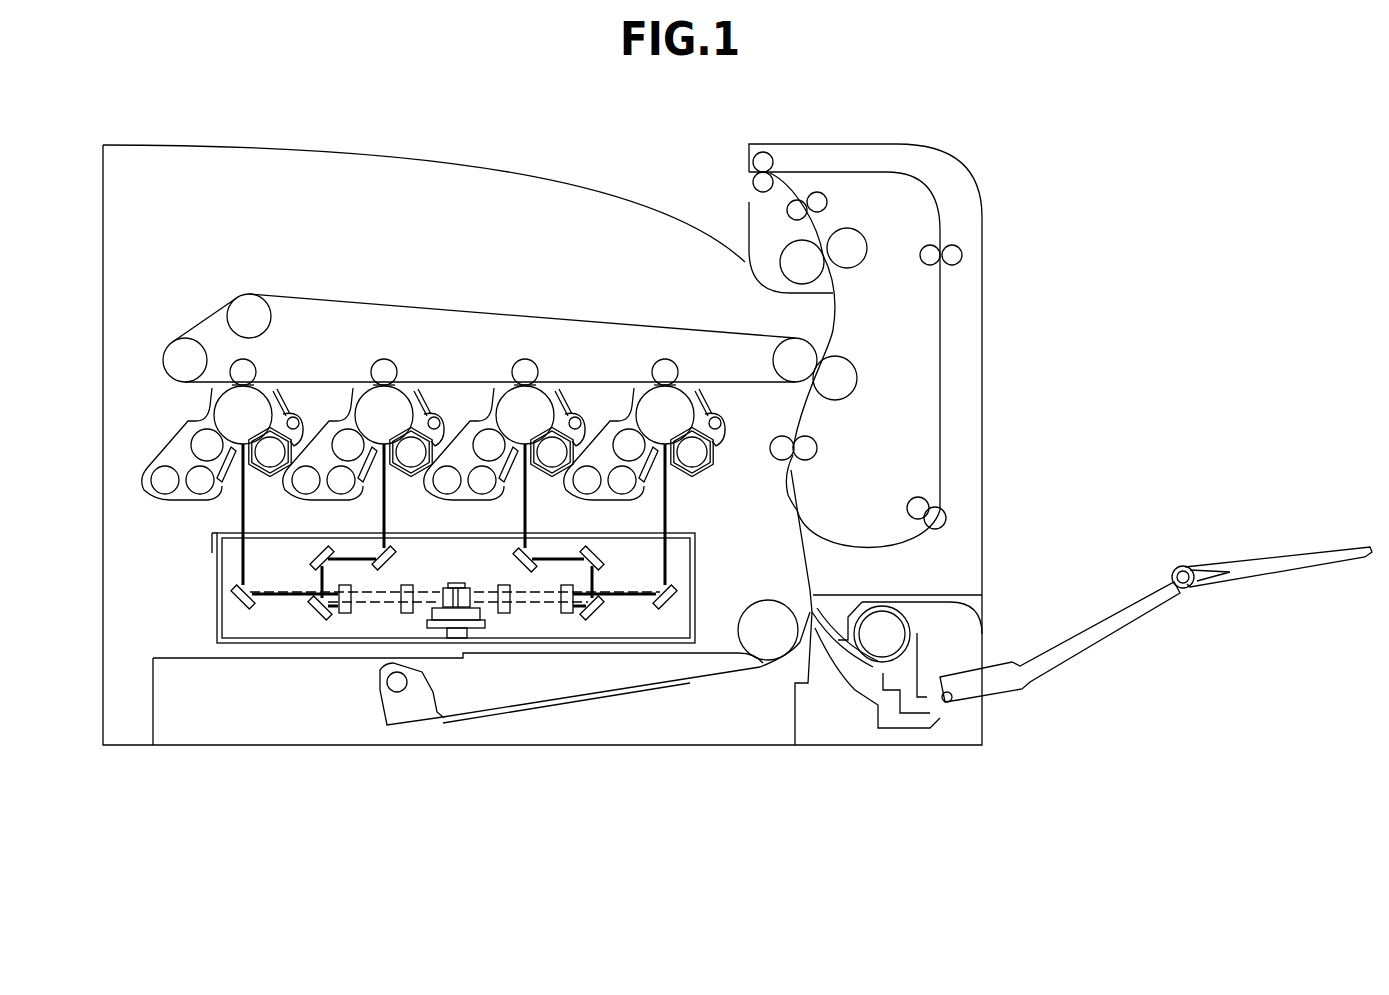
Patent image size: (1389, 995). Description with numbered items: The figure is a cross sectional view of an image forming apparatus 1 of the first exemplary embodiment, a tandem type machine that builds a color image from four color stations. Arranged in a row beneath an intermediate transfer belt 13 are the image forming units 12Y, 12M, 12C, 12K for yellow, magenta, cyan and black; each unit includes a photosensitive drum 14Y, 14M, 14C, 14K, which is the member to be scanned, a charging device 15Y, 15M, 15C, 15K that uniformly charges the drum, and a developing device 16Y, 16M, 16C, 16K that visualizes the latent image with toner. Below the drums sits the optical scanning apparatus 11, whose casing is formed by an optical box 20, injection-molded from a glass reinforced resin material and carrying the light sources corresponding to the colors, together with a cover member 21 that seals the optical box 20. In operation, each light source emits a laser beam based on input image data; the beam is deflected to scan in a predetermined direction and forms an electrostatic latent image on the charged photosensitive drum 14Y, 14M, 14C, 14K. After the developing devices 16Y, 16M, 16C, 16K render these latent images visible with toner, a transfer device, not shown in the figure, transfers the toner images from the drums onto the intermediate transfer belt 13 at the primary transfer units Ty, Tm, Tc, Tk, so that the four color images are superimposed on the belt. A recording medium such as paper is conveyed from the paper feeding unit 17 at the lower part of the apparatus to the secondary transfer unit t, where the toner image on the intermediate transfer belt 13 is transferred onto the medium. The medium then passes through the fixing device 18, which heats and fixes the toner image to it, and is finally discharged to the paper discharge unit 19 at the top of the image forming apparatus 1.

The image forming apparatus 1 is at (103, 352).
The optical scanning apparatus 11 is at (213, 600).
The image forming unit (yellow) 12Y is at (163, 503).
The image forming unit (magenta) 12M is at (313, 498).
The image forming unit (cyan) 12C is at (452, 500).
The image forming unit (black) 12K is at (600, 500).
The intermediate transfer belt 13 is at (345, 300).
The photosensitive drum (yellow) 14Y is at (285, 364).
The photosensitive drum (magenta) 14M is at (425, 364).
The photosensitive drum (cyan) 14C is at (565, 364).
The photosensitive drum (black) 14K is at (707, 364).
The charging device (yellow) 15Y is at (266, 474).
The charging device (magenta) 15M is at (407, 474).
The charging device (cyan) 15C is at (548, 474).
The charging device (black) 15K is at (688, 474).
The developing device (yellow) 16Y is at (181, 432).
The developing device (magenta) 16M is at (334, 432).
The developing device (cyan) 16C is at (476, 432).
The developing device (black) 16K is at (614, 430).
The paper feeding unit 17 is at (723, 678).
The fixing device 18 is at (866, 230).
The paper discharge unit 19 is at (492, 163).
The optical box 20 is at (702, 600).
The cover member 21 is at (702, 540).
The secondary transfer unit t is at (840, 359).
The primary transfer unit (yellow) Ty is at (238, 363).
The primary transfer unit (magenta) Tm is at (376, 362).
The primary transfer unit (cyan) Tc is at (516, 362).
The primary transfer unit (black) Tk is at (656, 362).